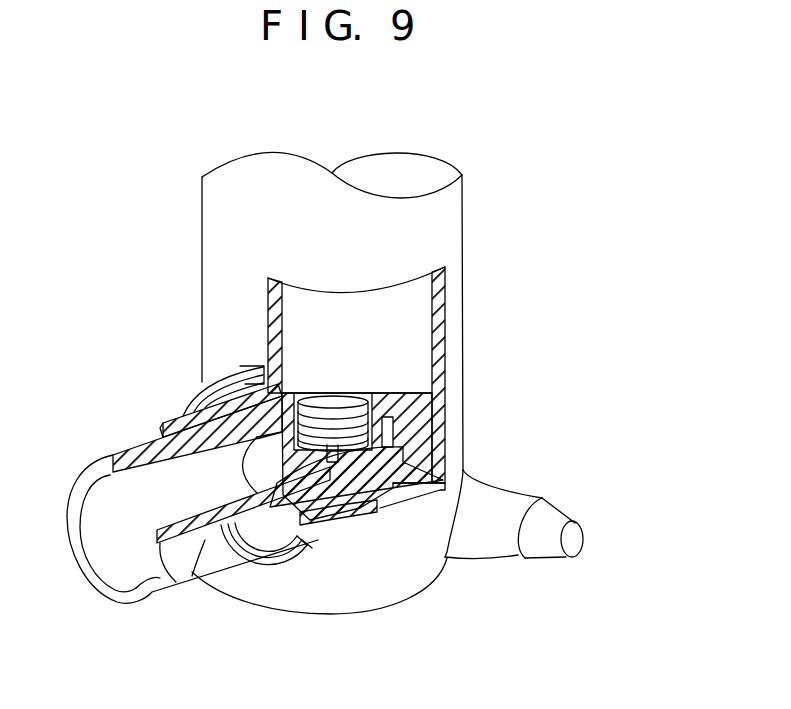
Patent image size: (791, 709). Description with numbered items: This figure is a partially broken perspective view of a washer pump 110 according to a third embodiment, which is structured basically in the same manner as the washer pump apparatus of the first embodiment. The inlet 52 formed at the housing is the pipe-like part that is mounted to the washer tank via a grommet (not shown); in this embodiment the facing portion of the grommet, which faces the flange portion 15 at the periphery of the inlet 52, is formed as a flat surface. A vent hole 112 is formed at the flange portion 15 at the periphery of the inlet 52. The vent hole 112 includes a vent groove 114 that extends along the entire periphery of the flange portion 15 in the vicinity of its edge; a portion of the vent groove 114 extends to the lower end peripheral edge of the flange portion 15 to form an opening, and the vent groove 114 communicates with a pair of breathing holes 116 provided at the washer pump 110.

The washer pump 110 is at (486, 260).
The inlet 52 is at (108, 596).
The vent hole 112 is at (225, 365).
The vent groove 114 is at (277, 570).
The flange portion 15 is at (305, 520).
The breathing holes 116 is at (345, 512).